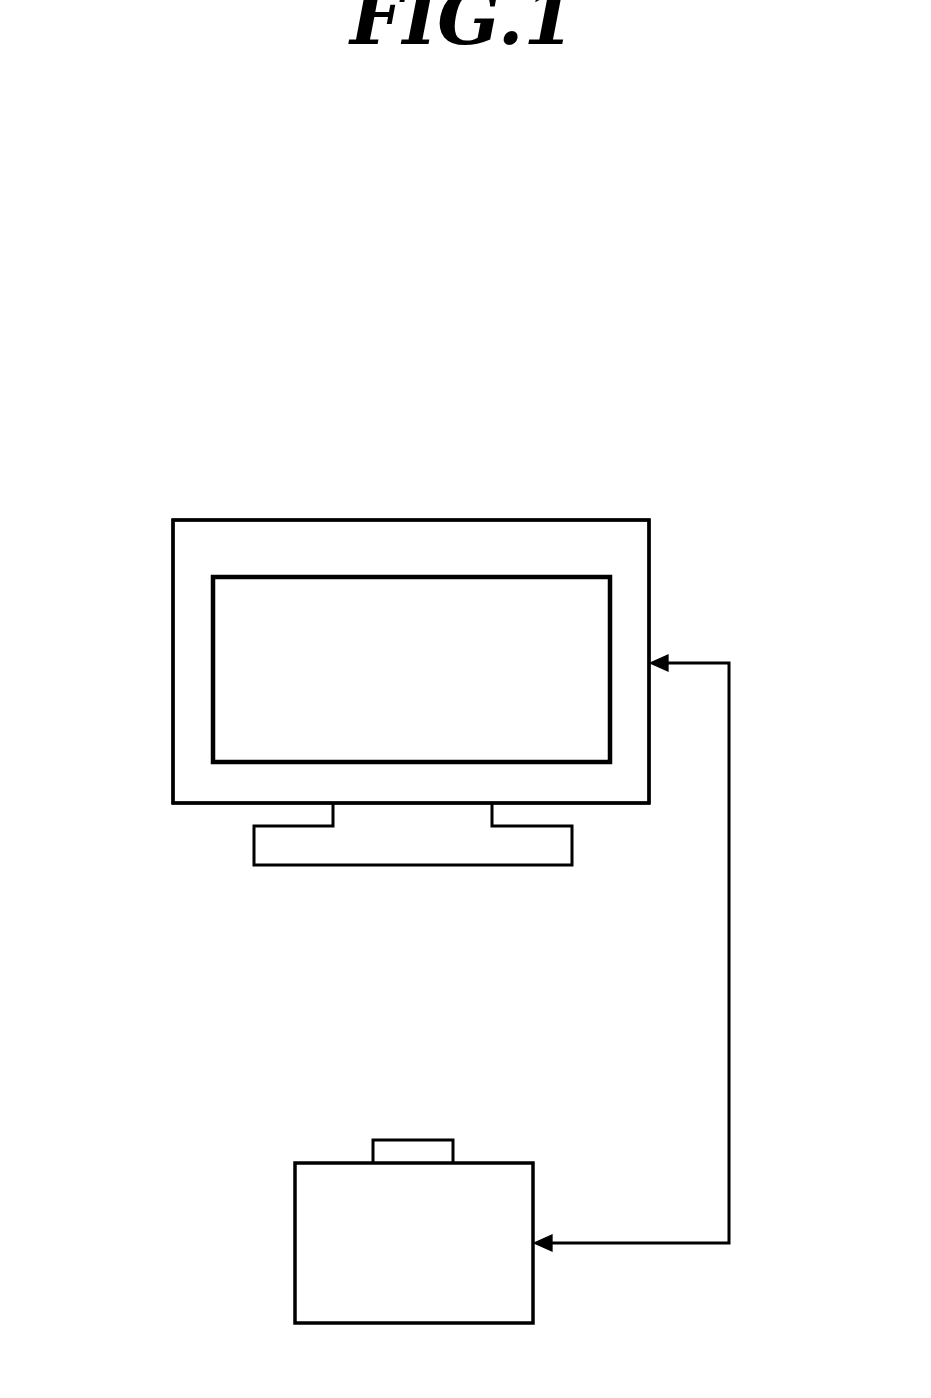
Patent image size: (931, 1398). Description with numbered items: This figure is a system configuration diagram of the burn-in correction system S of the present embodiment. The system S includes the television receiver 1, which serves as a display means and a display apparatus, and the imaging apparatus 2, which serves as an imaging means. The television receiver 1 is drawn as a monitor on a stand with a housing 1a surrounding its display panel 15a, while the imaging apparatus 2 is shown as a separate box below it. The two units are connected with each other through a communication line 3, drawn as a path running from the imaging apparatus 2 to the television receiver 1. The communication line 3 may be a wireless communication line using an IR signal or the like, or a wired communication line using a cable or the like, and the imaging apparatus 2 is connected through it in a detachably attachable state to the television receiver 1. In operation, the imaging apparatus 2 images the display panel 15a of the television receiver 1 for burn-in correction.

The burn-in correction system S is at (402, 392).
The television receiver 1 is at (185, 552).
The display unit housing 1a is at (185, 608).
The display panel 15a is at (212, 703).
The imaging apparatus 2 is at (535, 1203).
The communication line 3 is at (731, 875).